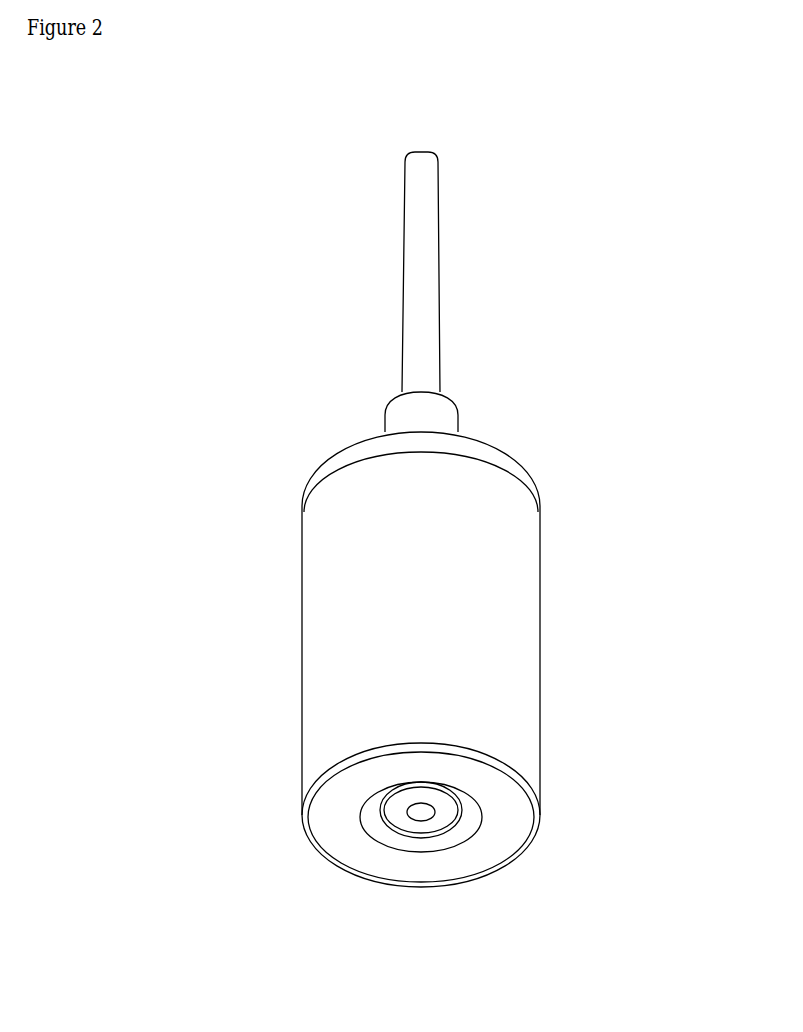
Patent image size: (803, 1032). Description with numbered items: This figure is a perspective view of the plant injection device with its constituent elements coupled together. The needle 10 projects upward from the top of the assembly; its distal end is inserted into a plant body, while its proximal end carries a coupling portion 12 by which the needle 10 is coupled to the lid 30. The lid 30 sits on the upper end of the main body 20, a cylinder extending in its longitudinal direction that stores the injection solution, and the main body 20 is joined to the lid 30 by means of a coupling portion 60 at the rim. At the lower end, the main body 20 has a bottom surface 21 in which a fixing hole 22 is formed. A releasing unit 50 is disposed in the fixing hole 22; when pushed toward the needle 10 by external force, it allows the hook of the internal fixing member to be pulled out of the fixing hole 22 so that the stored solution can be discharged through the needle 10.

The needle 10 is at (430, 303).
The coupling portion 12 is at (427, 413).
The main body 20 is at (477, 665).
The bottom surface 21 is at (490, 810).
The fixing hole 22 is at (383, 838).
The lid 30 is at (505, 448).
The releasing unit 50 is at (447, 820).
The coupling portion 60 is at (351, 467).